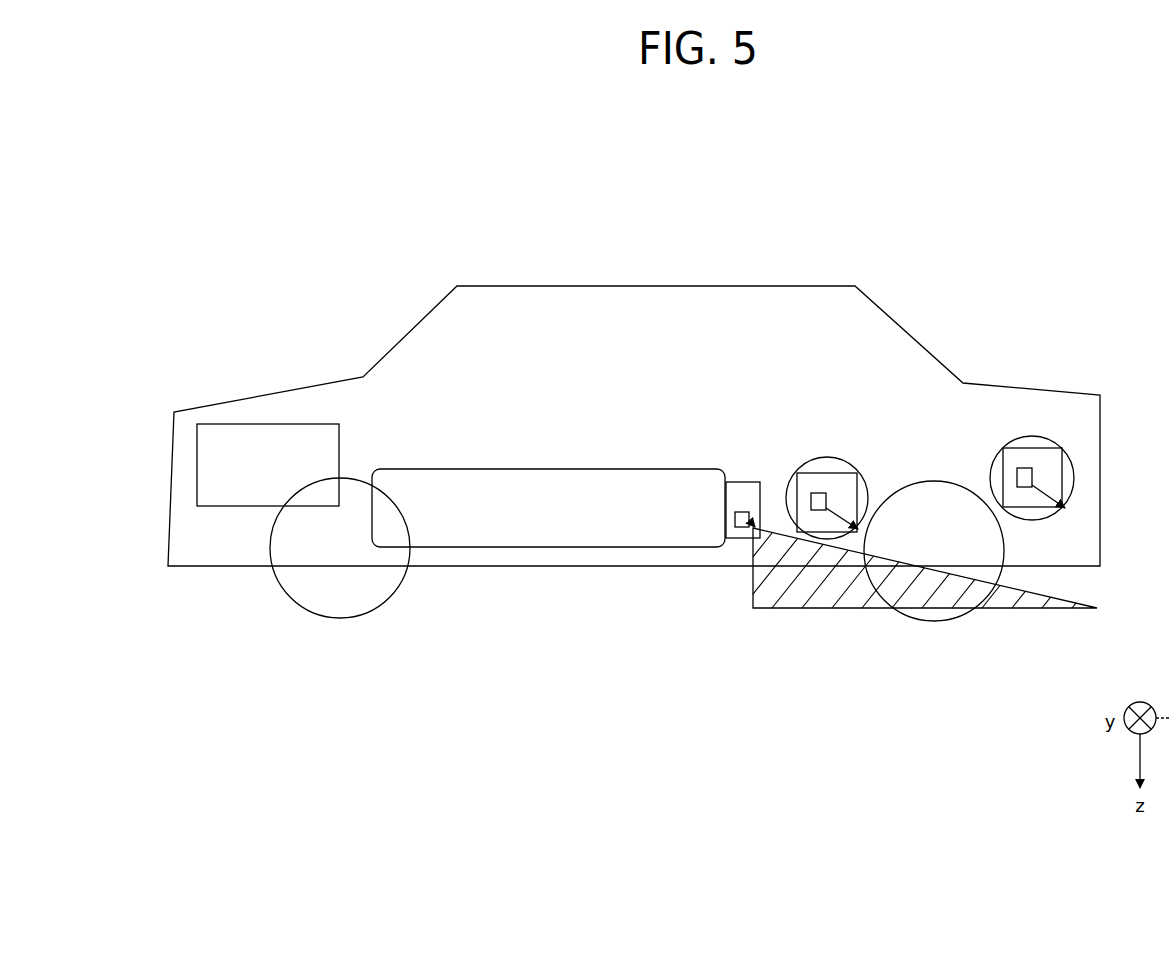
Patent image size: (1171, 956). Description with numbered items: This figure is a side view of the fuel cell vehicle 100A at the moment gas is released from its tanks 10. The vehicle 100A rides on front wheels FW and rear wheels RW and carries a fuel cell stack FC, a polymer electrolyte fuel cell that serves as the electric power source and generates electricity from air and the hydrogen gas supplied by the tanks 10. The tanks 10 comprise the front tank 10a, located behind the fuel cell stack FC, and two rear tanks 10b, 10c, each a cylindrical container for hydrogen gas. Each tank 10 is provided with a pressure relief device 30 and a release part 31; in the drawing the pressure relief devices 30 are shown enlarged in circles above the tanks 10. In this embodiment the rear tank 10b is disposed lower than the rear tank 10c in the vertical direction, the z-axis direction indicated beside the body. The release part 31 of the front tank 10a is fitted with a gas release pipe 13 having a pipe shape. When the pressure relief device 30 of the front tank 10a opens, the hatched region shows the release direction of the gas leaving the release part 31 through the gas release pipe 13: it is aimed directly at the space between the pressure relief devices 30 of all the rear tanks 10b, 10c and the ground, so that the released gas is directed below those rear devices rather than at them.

The vehicle 100A is at (1040, 260).
The tanks 10 is at (723, 597).
The tank 10a is at (648, 548).
The tank 10b is at (817, 533).
The tank 10c is at (1032, 570).
The gas release pipe 13 is at (756, 528).
The pressure relief device 30 is at (742, 511).
The release part 31 is at (748, 531).
The fuel cell stack FC is at (242, 506).
The front wheels FW is at (337, 617).
The rear wheels RW is at (923, 621).